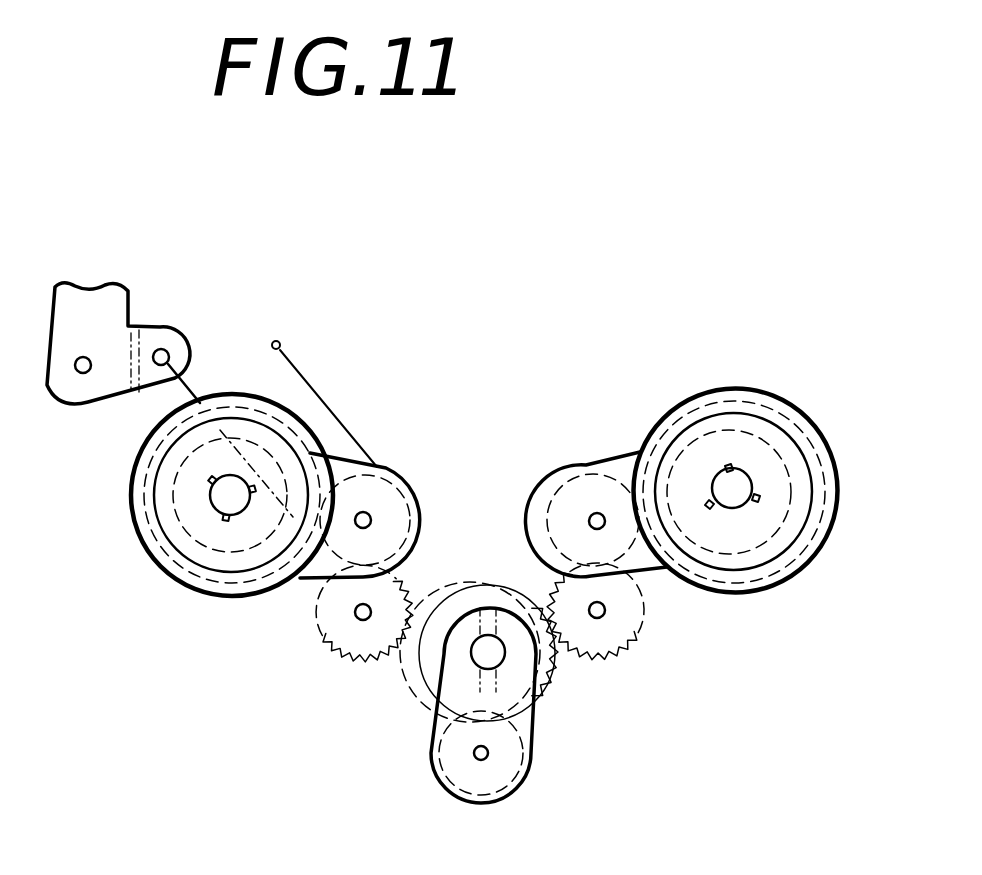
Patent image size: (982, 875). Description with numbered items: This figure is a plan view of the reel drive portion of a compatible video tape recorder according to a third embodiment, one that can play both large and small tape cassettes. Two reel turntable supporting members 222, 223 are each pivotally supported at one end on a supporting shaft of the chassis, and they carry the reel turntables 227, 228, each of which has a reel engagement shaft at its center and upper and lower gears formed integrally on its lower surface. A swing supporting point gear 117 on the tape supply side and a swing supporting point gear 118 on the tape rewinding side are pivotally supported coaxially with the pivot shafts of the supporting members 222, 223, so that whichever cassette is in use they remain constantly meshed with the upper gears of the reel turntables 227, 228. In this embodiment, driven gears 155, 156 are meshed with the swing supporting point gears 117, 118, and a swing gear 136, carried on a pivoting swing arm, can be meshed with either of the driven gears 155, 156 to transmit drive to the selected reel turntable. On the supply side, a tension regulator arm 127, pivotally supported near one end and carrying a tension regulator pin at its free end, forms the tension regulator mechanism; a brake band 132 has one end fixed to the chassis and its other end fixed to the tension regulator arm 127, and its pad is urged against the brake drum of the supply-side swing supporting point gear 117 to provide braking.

The swing supporting point gear 117 is at (420, 484).
The swing supporting point gear 118 is at (573, 467).
The tension regulator arm 127 is at (130, 307).
The brake band 132 is at (293, 362).
The swing gear 136 is at (540, 604).
The driven gear 155 is at (326, 642).
The driven gear 156 is at (620, 650).
The reel turntable supporting member 222 is at (358, 445).
The reel turntable supporting member 223 is at (622, 448).
The reel turntable 227 is at (197, 560).
The reel turntable 228 is at (800, 470).